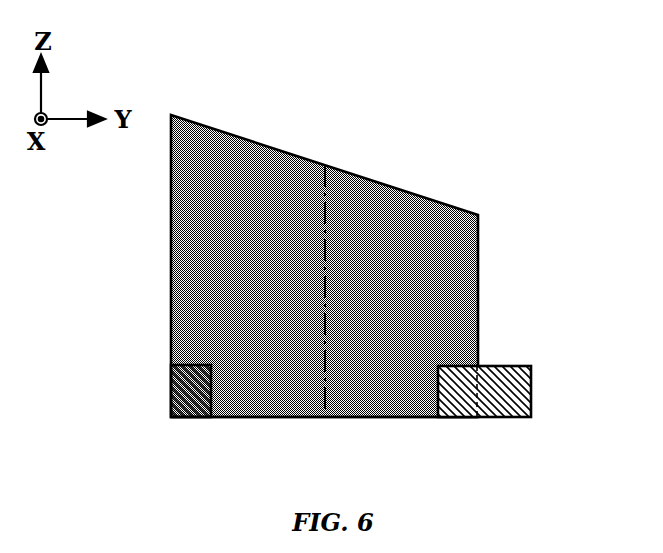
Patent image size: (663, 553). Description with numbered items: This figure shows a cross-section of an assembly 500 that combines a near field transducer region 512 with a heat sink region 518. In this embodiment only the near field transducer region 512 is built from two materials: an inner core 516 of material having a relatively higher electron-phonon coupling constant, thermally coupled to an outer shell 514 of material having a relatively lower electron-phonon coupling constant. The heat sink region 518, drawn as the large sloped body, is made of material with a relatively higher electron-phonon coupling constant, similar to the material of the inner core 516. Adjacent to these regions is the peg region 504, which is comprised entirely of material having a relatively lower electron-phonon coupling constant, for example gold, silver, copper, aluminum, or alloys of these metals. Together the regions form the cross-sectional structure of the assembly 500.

The assembly 500 is at (159, 90).
The heat sink region 518 is at (150, 218).
The inner core 516 is at (273, 402).
The near field transducer region 512 is at (141, 392).
The outer shell 514 is at (192, 402).
The peg region 504 is at (503, 390).